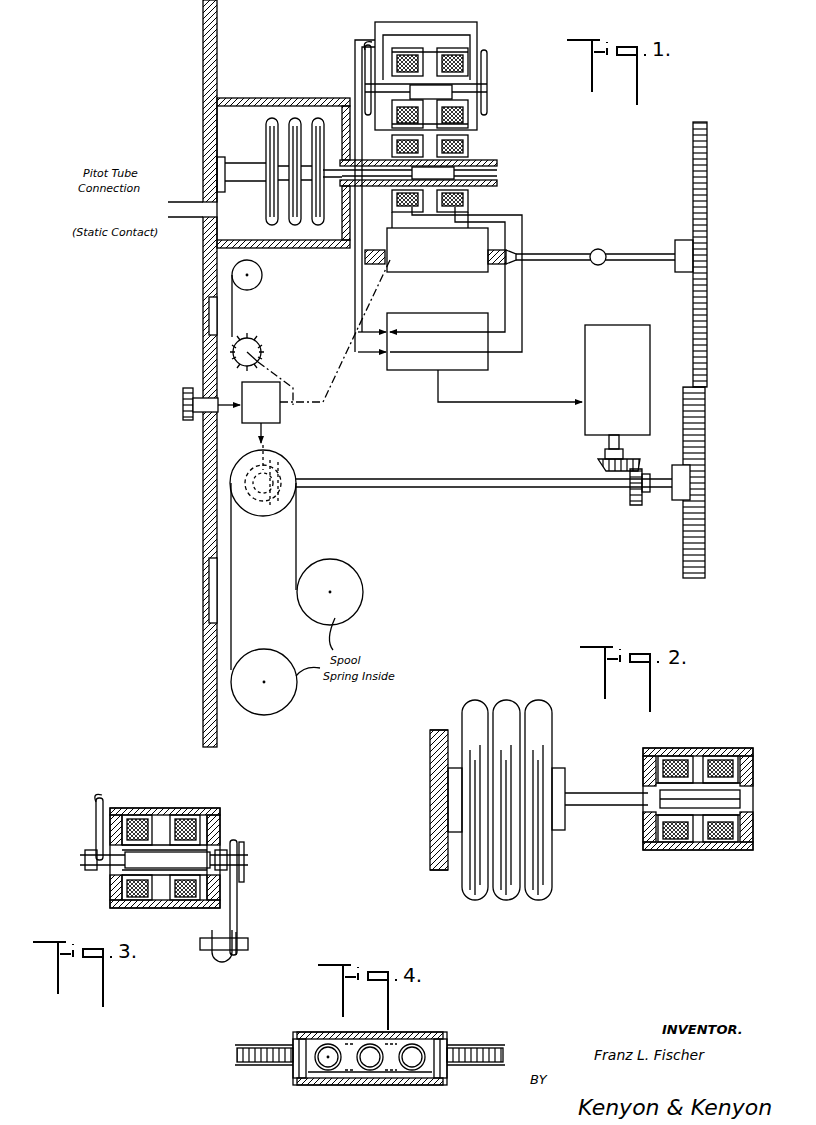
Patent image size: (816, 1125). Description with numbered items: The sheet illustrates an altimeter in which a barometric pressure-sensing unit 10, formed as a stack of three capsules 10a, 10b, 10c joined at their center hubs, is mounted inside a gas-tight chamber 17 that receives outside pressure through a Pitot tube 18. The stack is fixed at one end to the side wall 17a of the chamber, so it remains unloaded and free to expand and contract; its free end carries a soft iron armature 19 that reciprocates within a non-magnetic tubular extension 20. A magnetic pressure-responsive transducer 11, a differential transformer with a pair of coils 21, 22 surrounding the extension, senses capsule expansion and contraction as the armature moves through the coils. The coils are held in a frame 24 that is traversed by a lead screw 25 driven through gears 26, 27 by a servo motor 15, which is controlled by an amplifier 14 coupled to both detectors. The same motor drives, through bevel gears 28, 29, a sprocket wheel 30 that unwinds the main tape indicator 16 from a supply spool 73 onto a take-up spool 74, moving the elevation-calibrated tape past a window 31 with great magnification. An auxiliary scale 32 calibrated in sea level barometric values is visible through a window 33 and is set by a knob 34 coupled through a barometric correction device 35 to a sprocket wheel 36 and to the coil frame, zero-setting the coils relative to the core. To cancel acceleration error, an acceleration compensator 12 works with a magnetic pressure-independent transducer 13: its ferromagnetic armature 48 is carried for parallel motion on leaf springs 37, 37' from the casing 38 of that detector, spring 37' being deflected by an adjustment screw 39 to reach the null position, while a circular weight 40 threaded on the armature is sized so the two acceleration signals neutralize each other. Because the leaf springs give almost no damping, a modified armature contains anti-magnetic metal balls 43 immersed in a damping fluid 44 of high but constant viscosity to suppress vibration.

In FIG. 1, the barometric pressure-sensing unit 10 is at (286, 118).
In FIG. 1, the capsule 10a is at (263, 216).
In FIG. 2, the capsule 10a is at (475, 900).
In FIG. 1, the capsule 10b is at (296, 226).
In FIG. 2, the capsule 10b is at (506, 900).
In FIG. 1, the capsule 10c is at (318, 226).
In FIG. 2, the capsule 10c is at (550, 900).
In FIG. 1, the magnetic pressure-responsive transducer 11 is at (468, 140).
In FIG. 1, the acceleration compensator 12 is at (452, 90).
In FIG. 3, the acceleration compensator 12 is at (168, 808).
In FIG. 1, the magnetic pressure-independent transducer 13 is at (464, 56).
In FIG. 1, the amplifier 14 is at (430, 372).
In FIG. 1, the servo motor 15 is at (590, 327).
In FIG. 1, the main tape indicator 16 is at (299, 528).
In FIG. 1, the gas-tight chamber 17 is at (237, 116).
In FIG. 1, the side wall 17a is at (217, 137).
In FIG. 1, the Pitot tube 18 is at (176, 200).
In FIG. 1, the armature 19 is at (497, 172).
In FIG. 1, the tubular extension 20 is at (497, 184).
In FIG. 2, the coil 21 is at (672, 760).
In FIG. 1, the coil 22 is at (470, 146).
In FIG. 2, the coil 22 is at (722, 760).
In FIG. 1, the frame 24 is at (445, 252).
In FIG. 1, the lead screw 25 is at (569, 252).
In FIG. 1, the gear 26 is at (707, 343).
In FIG. 1, the gear 27 is at (705, 424).
In FIG. 1, the bevel gear 28 is at (632, 497).
In FIG. 1, the bevel gear 29 is at (598, 463).
In FIG. 1, the sprocket wheel 30 is at (292, 462).
In FIG. 1, the window 31 is at (207, 588).
In FIG. 1, the auxiliary scale 32 is at (232, 308).
In FIG. 1, the window 33 is at (207, 318).
In FIG. 1, the knob 34 is at (186, 418).
In FIG. 1, the barometric correction device 35 is at (282, 418).
In FIG. 1, the sprocket wheel 36 is at (262, 345).
In FIG. 1, the leaf spring 37 is at (349, 63).
In FIG. 3, the leaf spring 37 is at (114, 814).
In FIG. 1, the leaf spring 37' is at (511, 63).
In FIG. 3, the leaf spring 37' is at (261, 897).
In FIG. 3, the casing 38 is at (215, 810).
In FIG. 3, the adjustment screw 39 is at (248, 940).
In FIG. 3, the circular weight 40 is at (245, 842).
In FIG. 4, the anti-magnetic metal balls 43 is at (372, 1075).
In FIG. 4, the damping fluid 44 is at (400, 1040).
In FIG. 1, the armature 48 is at (428, 88).
In FIG. 3, the armature 48 is at (125, 862).
In FIG. 4, the armature 48 is at (324, 1045).
In FIG. 1, the supply spool 73 is at (360, 598).
In FIG. 1, the take-up spool 74 is at (290, 690).